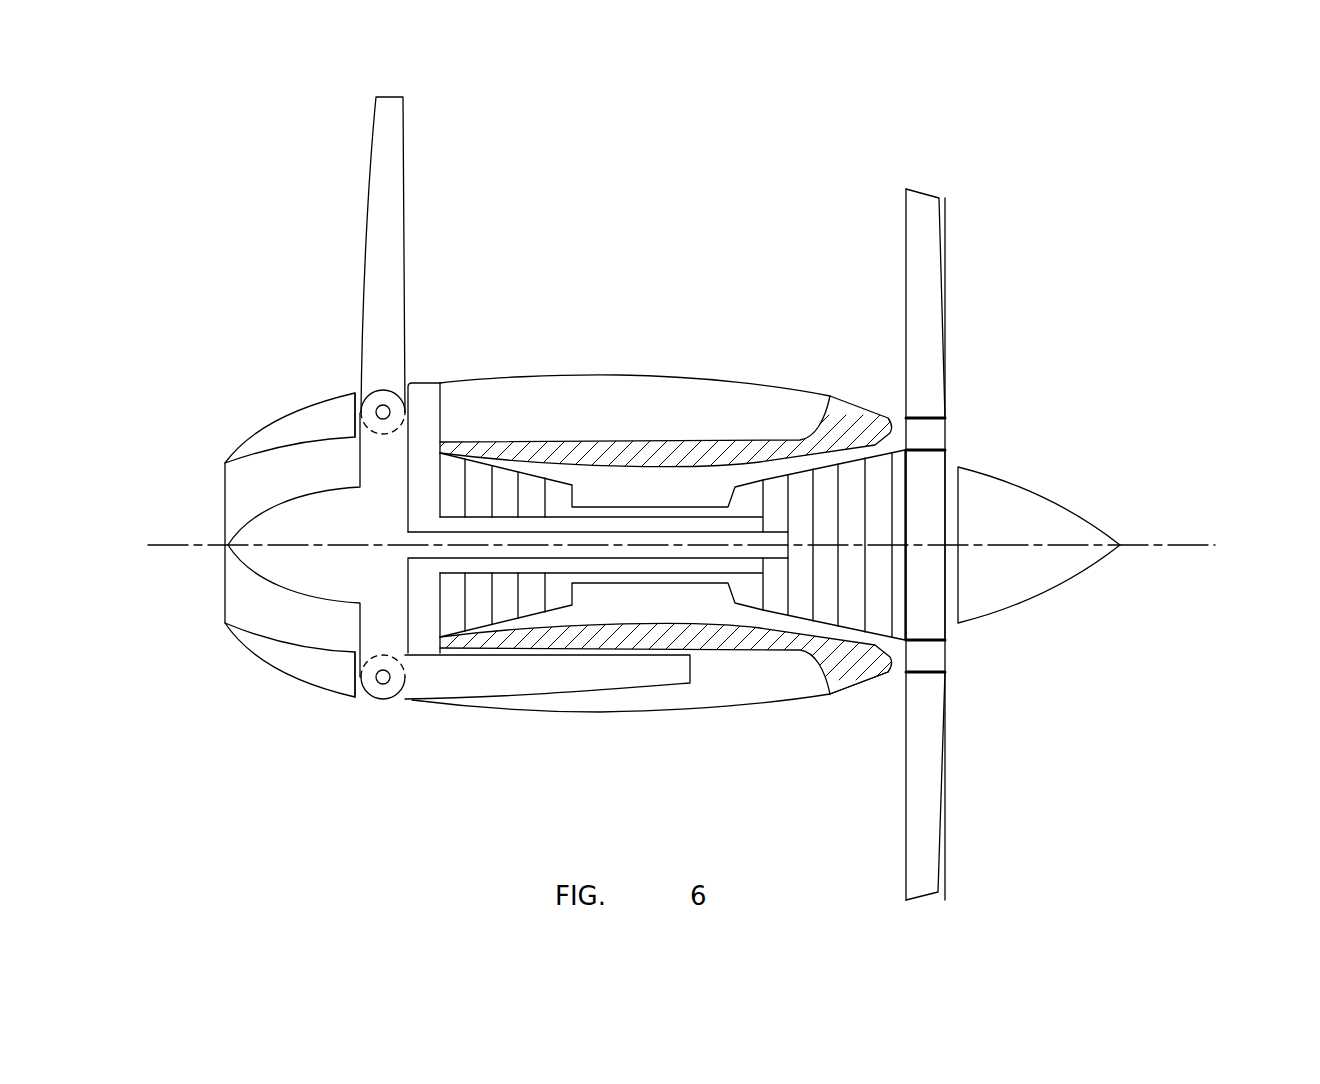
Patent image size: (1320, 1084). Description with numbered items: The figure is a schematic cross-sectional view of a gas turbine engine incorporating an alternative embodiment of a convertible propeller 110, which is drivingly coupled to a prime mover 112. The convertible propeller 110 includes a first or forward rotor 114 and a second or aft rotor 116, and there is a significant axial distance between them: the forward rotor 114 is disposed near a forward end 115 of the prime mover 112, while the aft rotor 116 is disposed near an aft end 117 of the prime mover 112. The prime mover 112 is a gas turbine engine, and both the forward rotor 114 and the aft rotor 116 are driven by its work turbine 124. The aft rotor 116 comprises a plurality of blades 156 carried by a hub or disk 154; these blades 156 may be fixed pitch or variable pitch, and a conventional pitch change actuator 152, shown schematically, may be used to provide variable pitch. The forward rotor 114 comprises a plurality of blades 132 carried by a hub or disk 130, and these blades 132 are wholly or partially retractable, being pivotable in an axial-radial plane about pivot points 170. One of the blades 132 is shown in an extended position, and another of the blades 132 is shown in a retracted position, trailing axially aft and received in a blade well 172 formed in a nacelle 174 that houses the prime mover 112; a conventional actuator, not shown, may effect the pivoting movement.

The convertible propeller 110 is at (796, 188).
The prime mover 112 is at (633, 362).
The forward rotor 114 is at (354, 489).
The forward end 115 is at (228, 622).
The aft rotor 116 is at (958, 452).
The aft end 117 is at (1122, 545).
The work turbine 124 is at (853, 603).
The hub 130 is at (378, 613).
The blades 132 is at (390, 206).
The pitch change actuator 152 is at (925, 428).
The hub 154 is at (930, 617).
The blades 156 is at (925, 295).
The pivot points 170 is at (383, 412).
The blade well 172 is at (720, 680).
The nacelle 174 is at (765, 378).